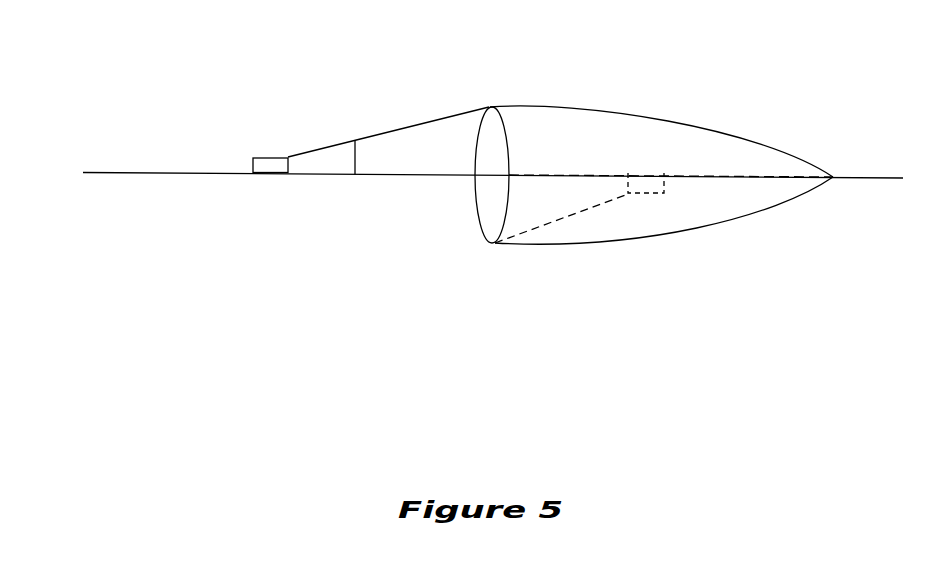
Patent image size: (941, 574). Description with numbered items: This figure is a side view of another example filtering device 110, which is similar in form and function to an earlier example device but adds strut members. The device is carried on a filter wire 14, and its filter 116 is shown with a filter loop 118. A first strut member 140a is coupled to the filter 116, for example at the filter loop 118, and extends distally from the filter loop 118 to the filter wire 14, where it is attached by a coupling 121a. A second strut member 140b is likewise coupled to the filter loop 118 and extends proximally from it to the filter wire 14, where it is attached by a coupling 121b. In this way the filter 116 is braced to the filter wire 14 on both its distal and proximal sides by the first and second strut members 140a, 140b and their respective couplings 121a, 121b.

The filter wire 14 is at (137, 172).
The filtering device 110 is at (282, 45).
The filter 116 is at (455, 128).
The filter loop 118 is at (503, 128).
The coupling 121a is at (653, 193).
The coupling 121b is at (267, 157).
The first strut member 140a is at (562, 220).
The second strut member 140b is at (354, 176).